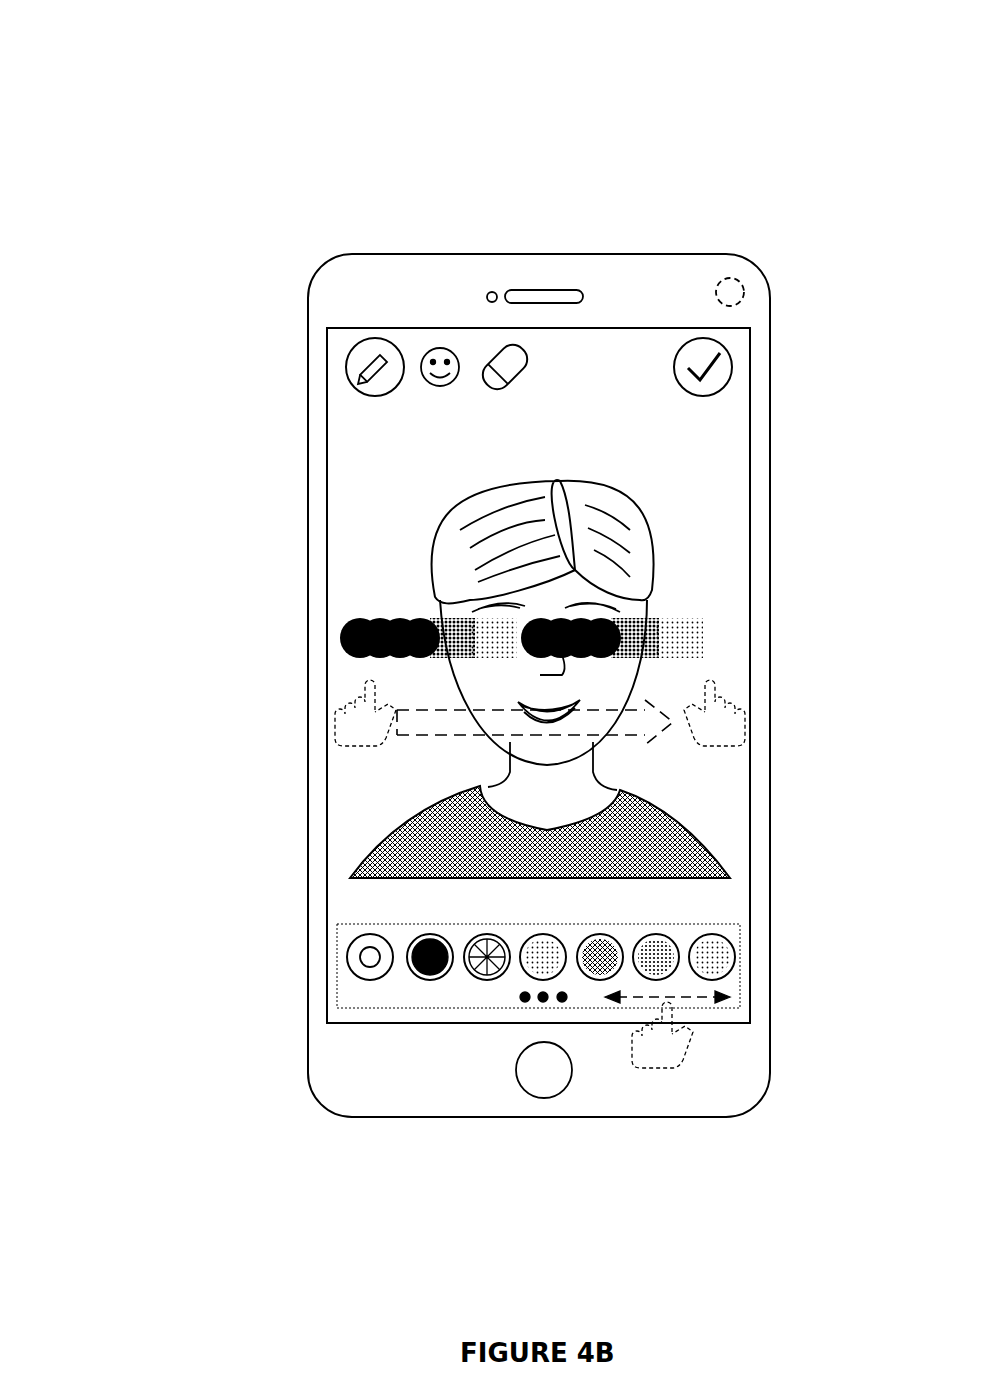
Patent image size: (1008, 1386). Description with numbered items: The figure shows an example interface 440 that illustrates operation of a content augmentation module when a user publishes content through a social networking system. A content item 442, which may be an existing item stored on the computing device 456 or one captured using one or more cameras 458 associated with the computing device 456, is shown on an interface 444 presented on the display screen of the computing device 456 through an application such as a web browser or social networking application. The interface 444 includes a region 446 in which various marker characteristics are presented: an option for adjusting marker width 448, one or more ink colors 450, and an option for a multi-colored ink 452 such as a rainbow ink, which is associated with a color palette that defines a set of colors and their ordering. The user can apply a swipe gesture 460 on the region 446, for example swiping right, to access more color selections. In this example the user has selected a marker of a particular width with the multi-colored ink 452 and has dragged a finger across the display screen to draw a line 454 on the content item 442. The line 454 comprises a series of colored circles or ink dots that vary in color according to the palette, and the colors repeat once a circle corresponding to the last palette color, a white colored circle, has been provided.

The example interface 440 is at (122, 82).
The content item 442 is at (360, 507).
The interface 444 is at (327, 400).
The region 446 is at (337, 972).
The marker width option 448 is at (370, 980).
The ink colors 450 is at (675, 945).
The multi-colored ink option 452 is at (487, 980).
The line 454 is at (340, 643).
The computing device 456 is at (308, 294).
The cameras 458 is at (487, 293).
The swipe gesture 460 is at (655, 1068).